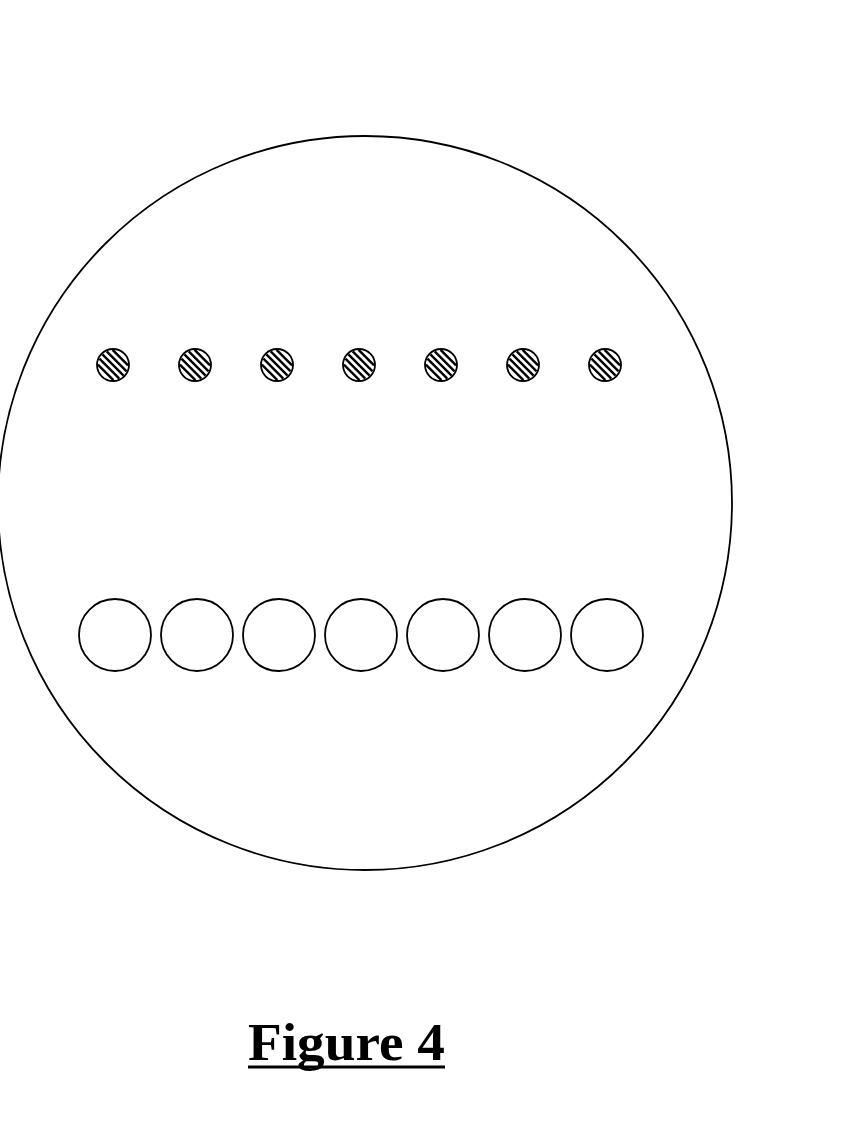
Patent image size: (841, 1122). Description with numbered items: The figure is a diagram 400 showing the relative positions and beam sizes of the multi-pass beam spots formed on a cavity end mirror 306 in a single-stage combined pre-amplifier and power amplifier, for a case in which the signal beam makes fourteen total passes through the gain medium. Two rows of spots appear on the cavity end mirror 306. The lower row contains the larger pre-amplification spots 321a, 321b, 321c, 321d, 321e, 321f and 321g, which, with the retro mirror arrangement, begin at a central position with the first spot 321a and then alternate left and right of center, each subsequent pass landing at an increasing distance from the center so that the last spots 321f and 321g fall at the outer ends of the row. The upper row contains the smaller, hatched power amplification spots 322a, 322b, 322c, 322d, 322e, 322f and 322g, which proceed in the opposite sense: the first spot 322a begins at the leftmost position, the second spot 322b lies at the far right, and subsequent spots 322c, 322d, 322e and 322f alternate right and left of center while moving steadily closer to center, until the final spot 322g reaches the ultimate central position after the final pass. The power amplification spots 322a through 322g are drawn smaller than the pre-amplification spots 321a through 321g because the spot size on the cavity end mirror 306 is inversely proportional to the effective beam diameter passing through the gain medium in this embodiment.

The diagram 400 is at (184, 81).
The cavity end mirror 306 is at (545, 177).
The power amplification beam spot 322a is at (123, 380).
The power amplification beam spot 322b is at (615, 380).
The power amplification beam spot 322c is at (205, 380).
The power amplification beam spot 322d is at (533, 380).
The power amplification beam spot 322e is at (287, 380).
The power amplification beam spot 322f is at (451, 380).
The power amplification beam spot 322g is at (369, 380).
The pre-amplification beam spot 321a is at (388, 662).
The pre-amplification beam spot 321b is at (470, 662).
The pre-amplification beam spot 321c is at (306, 662).
The pre-amplification beam spot 321d is at (552, 662).
The pre-amplification beam spot 321e is at (224, 662).
The pre-amplification beam spot 321f is at (634, 662).
The pre-amplification beam spot 321g is at (142, 662).